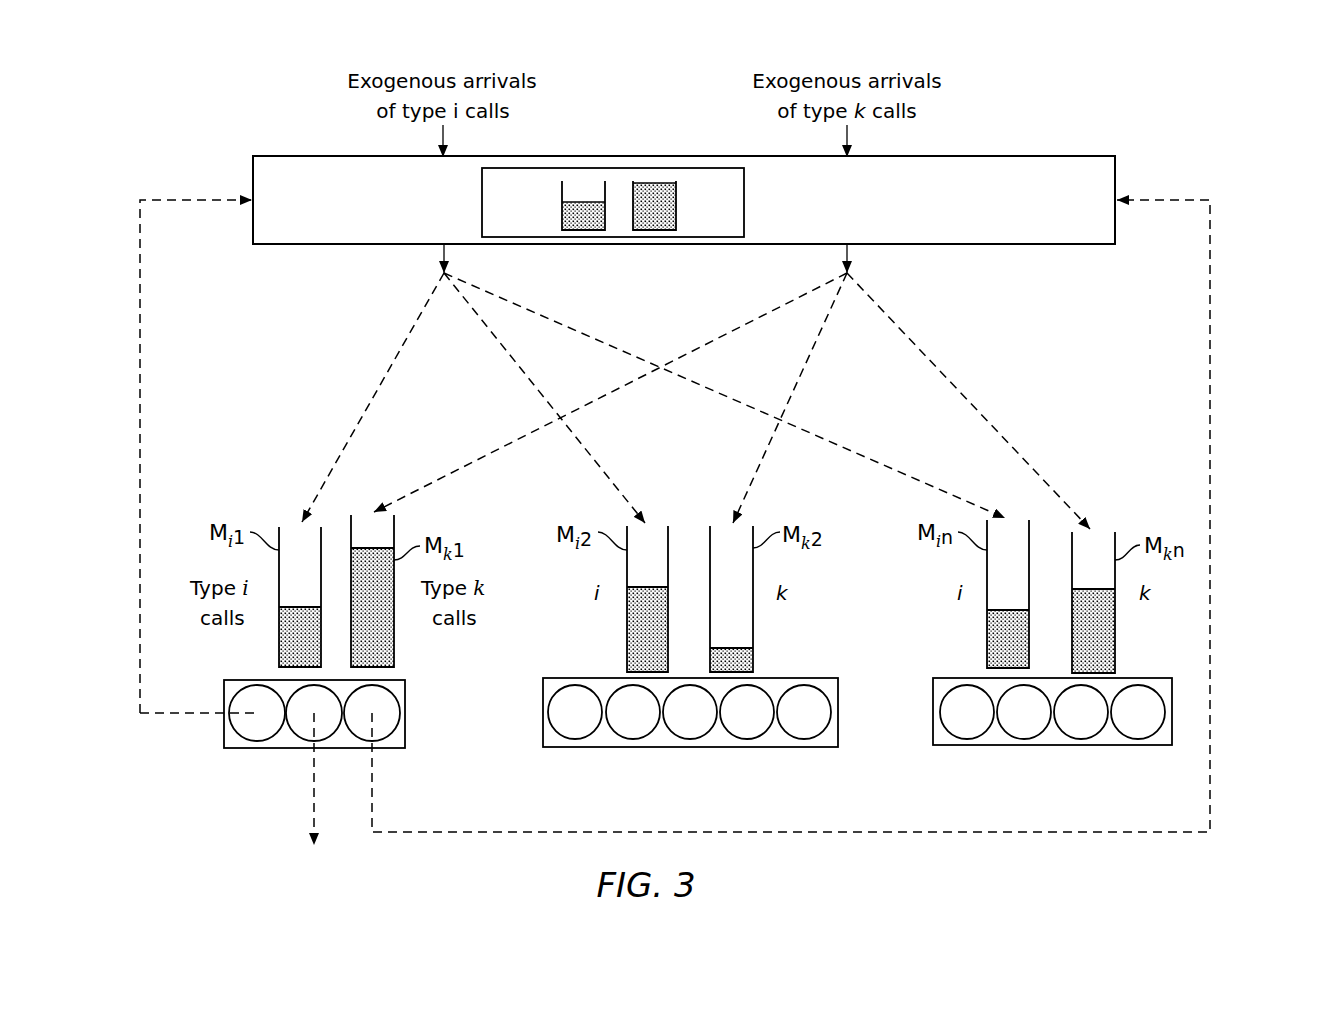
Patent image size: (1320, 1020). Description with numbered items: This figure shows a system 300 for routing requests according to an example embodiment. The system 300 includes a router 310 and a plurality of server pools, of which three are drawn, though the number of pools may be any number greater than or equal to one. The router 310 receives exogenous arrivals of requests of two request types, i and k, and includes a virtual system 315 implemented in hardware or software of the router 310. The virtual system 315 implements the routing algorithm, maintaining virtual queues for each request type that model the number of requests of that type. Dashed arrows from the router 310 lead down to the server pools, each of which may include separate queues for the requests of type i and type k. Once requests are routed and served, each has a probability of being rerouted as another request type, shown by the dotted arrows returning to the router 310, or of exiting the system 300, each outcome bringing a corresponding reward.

The system 300 is at (1216, 100).
The router 310 is at (1116, 172).
The virtual system 315 is at (745, 205).